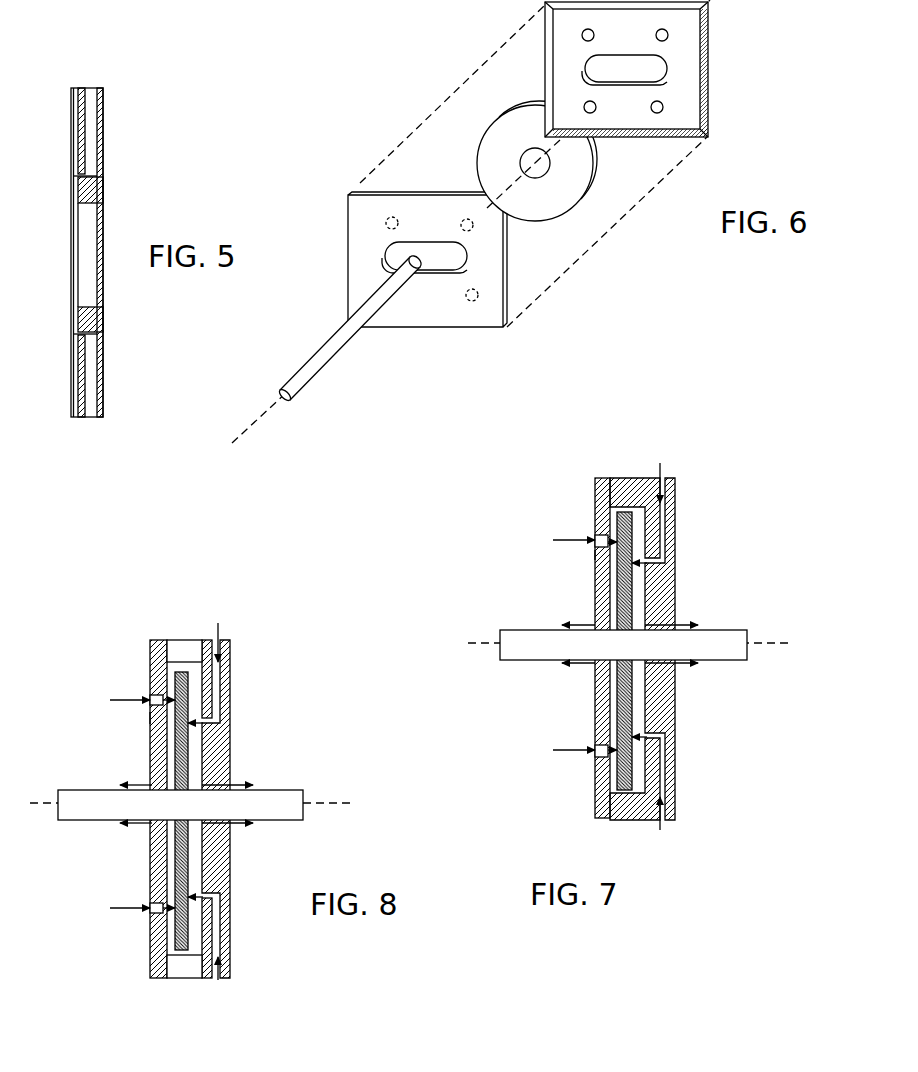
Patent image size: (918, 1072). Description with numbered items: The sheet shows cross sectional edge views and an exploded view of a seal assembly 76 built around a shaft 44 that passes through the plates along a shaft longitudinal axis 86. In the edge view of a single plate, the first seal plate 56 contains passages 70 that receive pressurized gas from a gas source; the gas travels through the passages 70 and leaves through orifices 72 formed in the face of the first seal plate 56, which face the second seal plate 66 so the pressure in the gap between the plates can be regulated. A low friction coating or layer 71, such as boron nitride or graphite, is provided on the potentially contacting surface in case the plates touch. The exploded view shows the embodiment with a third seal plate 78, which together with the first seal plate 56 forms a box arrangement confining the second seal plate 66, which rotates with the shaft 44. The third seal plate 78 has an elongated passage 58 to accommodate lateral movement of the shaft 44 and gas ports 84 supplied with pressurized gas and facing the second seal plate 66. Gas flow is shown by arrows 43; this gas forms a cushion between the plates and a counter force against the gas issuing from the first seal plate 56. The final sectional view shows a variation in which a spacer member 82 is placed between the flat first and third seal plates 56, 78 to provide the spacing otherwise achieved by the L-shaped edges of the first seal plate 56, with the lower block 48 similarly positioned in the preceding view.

In FIG. 8, the arrows 43 is at (218, 623).
In FIG. 7, the arrows 43 is at (662, 463).
In FIG. 6, the shaft 44 is at (345, 353).
In FIG. 8, the shaft 44 is at (287, 820).
In FIG. 7, the shaft 44 is at (733, 660).
In FIG. 7, the bottom block 48 is at (663, 782).
In FIG. 5, the first seal plate 56 is at (114, 100).
In FIG. 6, the first seal plate 56 is at (708, 60).
In FIG. 8, the first seal plate 56 is at (232, 687).
In FIG. 7, the first seal plate 56 is at (677, 527).
In FIG. 5, the elongated passage 58 is at (85, 213).
In FIG. 6, the elongated passage 58 is at (660, 85).
In FIG. 6, the second seal plate 66 is at (482, 143).
In FIG. 8, the second seal plate 66 is at (175, 935).
In FIG. 7, the second seal plate 66 is at (620, 775).
In FIG. 5, the passages 70 is at (93, 118).
In FIG. 8, the passages 70 is at (220, 705).
In FIG. 7, the passages 70 is at (663, 543).
In FIG. 5, the coating or layer 71 is at (73, 405).
In FIG. 5, the orifices 72 is at (75, 172).
In FIG. 6, the orifices 72 is at (594, 31).
In FIG. 6, the seal assembly 76 is at (388, 111).
In FIG. 6, the third seal plate 78 is at (365, 190).
In FIG. 8, the third seal plate 78 is at (150, 872).
In FIG. 7, the third seal plate 78 is at (595, 712).
In FIG. 8, the spacer member 82 is at (183, 645).
In FIG. 6, the gas ports 84 is at (392, 214).
In FIG. 8, the gas ports 84 is at (150, 718).
In FIG. 7, the gas ports 84 is at (597, 555).
In FIG. 6, the shaft longitudinal axis 86 is at (252, 425).
In FIG. 8, the shaft longitudinal axis 86 is at (323, 803).
In FIG. 7, the shaft longitudinal axis 86 is at (763, 643).